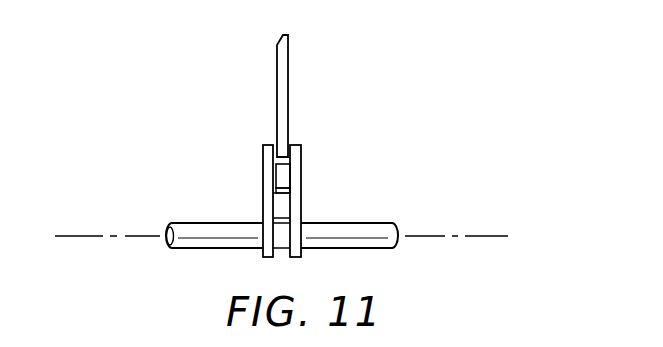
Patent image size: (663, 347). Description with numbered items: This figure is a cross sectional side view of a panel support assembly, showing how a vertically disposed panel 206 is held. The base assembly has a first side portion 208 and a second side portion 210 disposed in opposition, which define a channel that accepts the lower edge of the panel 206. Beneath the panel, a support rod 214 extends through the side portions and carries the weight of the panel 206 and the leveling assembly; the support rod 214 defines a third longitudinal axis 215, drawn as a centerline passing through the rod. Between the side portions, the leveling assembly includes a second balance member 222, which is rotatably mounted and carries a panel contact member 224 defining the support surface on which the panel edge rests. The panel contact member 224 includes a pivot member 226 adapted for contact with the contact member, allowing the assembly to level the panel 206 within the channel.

The panel 206 is at (288, 44).
The first side portion 208 is at (266, 152).
The second side portion 210 is at (302, 153).
The support rod 214 is at (207, 233).
The third longitudinal axis 215 is at (438, 235).
The second balance member 222 is at (285, 206).
The panel contact member 224 is at (277, 172).
The pivot member 226 is at (277, 190).